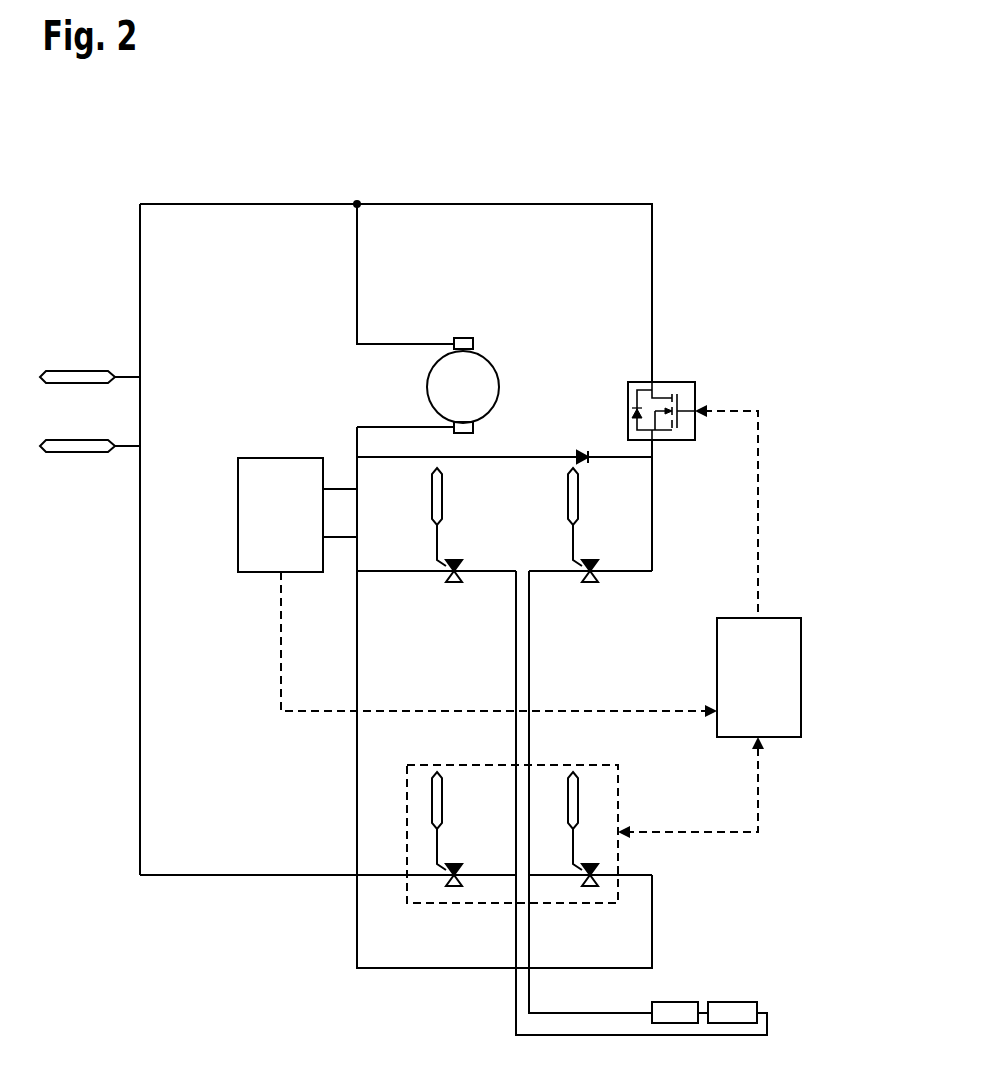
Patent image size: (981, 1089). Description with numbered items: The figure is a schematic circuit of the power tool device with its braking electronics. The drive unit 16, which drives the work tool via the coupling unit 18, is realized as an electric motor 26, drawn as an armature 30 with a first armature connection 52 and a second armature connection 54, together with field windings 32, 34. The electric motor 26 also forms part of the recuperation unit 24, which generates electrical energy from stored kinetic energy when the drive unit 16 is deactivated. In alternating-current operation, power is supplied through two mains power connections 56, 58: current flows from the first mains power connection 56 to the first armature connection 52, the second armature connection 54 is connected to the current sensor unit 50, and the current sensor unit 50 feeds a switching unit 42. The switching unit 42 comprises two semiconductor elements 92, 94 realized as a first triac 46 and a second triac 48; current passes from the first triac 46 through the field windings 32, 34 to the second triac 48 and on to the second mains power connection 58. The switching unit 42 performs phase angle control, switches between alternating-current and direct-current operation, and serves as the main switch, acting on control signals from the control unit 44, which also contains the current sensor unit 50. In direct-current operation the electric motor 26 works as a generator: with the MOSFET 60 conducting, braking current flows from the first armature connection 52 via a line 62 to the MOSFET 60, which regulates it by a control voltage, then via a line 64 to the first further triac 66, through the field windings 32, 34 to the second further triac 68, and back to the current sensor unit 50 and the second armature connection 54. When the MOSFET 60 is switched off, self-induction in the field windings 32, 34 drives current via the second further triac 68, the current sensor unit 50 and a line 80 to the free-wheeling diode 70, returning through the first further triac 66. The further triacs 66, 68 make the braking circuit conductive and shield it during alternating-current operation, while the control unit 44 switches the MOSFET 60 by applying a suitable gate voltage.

The drive unit 16 is at (427, 543).
The coupling unit 18 is at (427, 543).
The recuperation unit 24 is at (427, 543).
The electric motor 26 is at (560, 240).
The armature 30 is at (458, 349).
The field winding 32 is at (672, 1002).
The field winding 34 is at (728, 1002).
The switching unit 42 is at (576, 890).
The control unit 44 is at (790, 618).
The first triac 46 is at (672, 829).
The second triac 48 is at (419, 894).
The current sensor unit 50 is at (278, 458).
The first armature connection 52 is at (458, 338).
The second armature connection 54 is at (473, 427).
The first mains power connection 56 is at (56, 371).
The second mains power connection 58 is at (58, 452).
The MOSFET 60 is at (664, 382).
The line 62 is at (518, 204).
The line 64 is at (652, 494).
The first further triac 66 is at (596, 583).
The second further triac 68 is at (460, 583).
The free-wheeling diode 70 is at (587, 452).
The line 80 is at (403, 573).
The semiconductor element 92 is at (598, 872).
The semiconductor element 94 is at (455, 885).